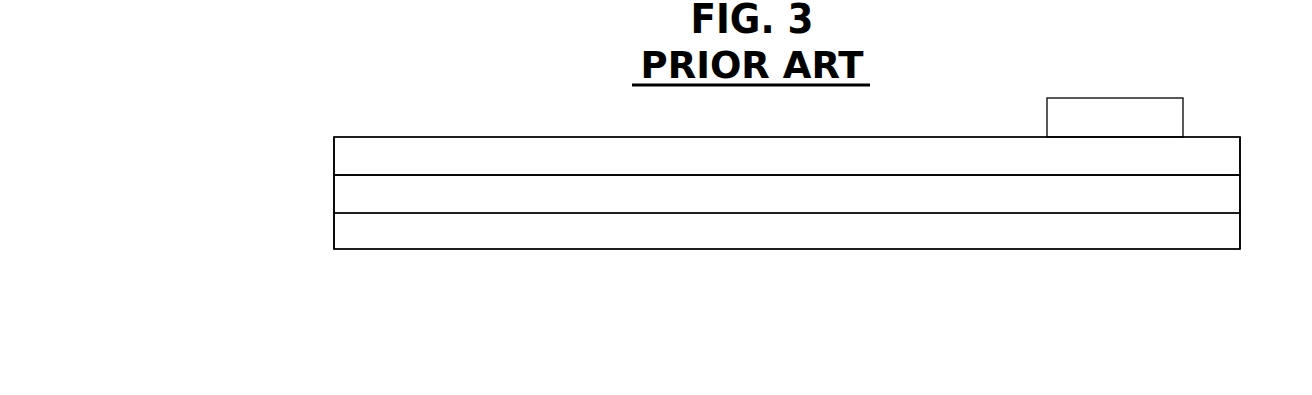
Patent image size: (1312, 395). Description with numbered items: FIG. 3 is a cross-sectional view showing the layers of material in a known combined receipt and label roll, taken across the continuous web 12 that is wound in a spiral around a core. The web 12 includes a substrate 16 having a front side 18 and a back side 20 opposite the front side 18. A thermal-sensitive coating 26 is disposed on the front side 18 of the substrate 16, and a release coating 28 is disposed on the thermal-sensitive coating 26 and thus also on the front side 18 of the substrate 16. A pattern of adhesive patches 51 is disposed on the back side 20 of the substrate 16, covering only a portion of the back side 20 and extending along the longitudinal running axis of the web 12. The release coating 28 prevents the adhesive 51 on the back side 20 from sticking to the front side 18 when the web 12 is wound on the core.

The web 12 is at (487, 98).
The substrate 16 is at (346, 156).
The front side 18 is at (367, 176).
The back side 20 is at (388, 137).
The thermal-sensitive coating 26 is at (343, 185).
The release coating 28 is at (351, 236).
The adhesive patches 51 is at (1047, 116).